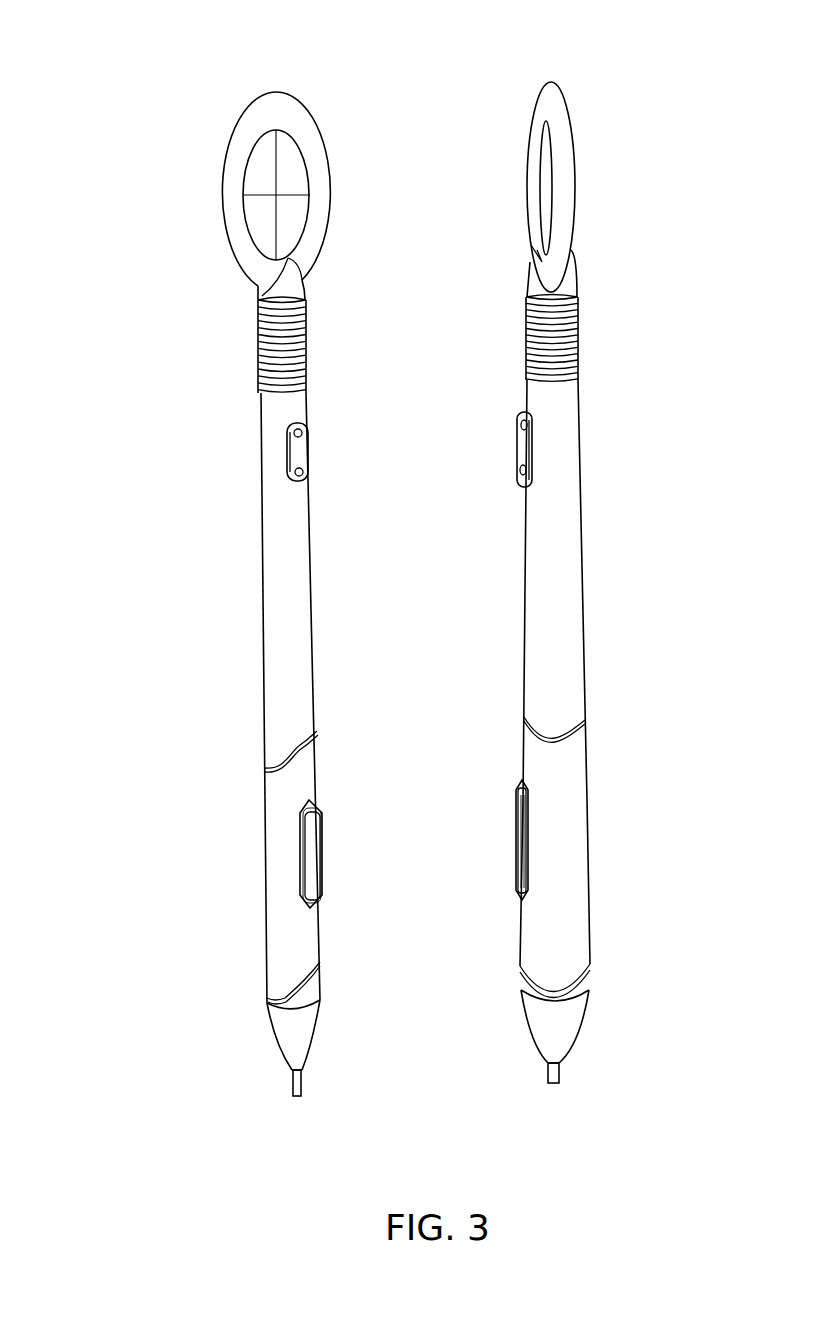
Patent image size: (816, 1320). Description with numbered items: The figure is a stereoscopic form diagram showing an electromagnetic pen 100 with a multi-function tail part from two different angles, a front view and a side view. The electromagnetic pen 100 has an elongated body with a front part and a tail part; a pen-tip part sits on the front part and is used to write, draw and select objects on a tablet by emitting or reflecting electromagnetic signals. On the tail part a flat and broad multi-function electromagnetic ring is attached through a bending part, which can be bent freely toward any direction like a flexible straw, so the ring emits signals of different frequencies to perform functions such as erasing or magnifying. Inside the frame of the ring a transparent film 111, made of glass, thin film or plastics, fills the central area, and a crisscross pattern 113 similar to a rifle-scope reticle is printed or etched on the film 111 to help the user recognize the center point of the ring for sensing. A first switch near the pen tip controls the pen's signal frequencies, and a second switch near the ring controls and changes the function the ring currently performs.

The electromagnetic pen 100 is at (114, 89).
The film 111 is at (263, 219).
The crisscross pattern 113 is at (272, 193).